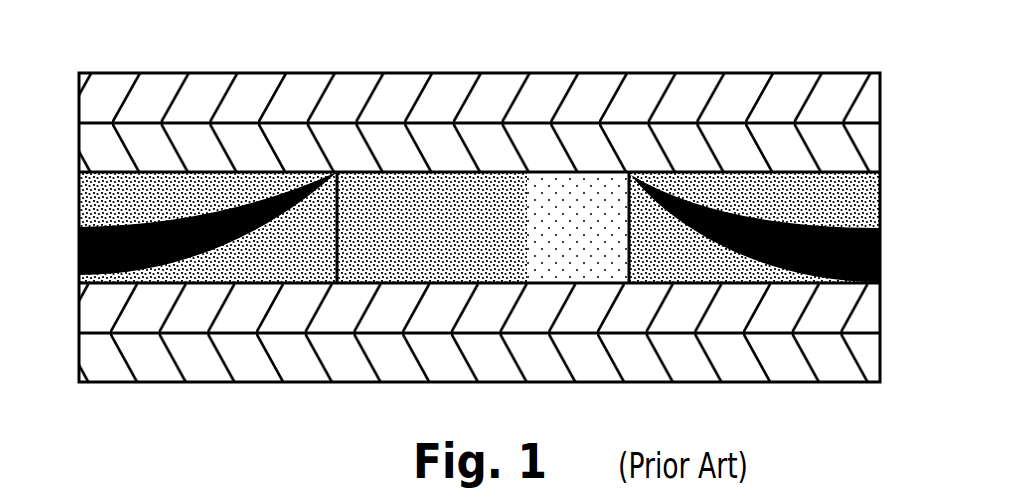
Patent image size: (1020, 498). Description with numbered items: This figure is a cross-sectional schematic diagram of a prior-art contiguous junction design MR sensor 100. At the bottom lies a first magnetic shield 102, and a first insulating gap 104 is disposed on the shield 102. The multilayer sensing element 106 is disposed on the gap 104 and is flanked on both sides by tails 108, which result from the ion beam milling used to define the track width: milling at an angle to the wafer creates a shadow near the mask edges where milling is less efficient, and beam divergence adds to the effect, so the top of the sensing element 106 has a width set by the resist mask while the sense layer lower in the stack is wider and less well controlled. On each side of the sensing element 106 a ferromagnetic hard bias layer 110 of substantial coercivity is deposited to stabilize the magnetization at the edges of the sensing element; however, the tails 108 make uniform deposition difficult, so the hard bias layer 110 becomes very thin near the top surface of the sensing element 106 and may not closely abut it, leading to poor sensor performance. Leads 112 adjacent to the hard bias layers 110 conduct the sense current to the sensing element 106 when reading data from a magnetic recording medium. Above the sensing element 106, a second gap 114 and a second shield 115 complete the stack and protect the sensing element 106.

The MR sensor 100 is at (260, 65).
The first magnetic shield 102 is at (479, 357).
The first insulating gap 104 is at (479, 308).
The sensing element 106 is at (483, 227).
The tails 108 is at (479, 227).
The hard bias layer 110 is at (78, 273).
The leads 112 is at (78, 214).
The second gap 114 is at (479, 147).
The second shield 115 is at (479, 98).